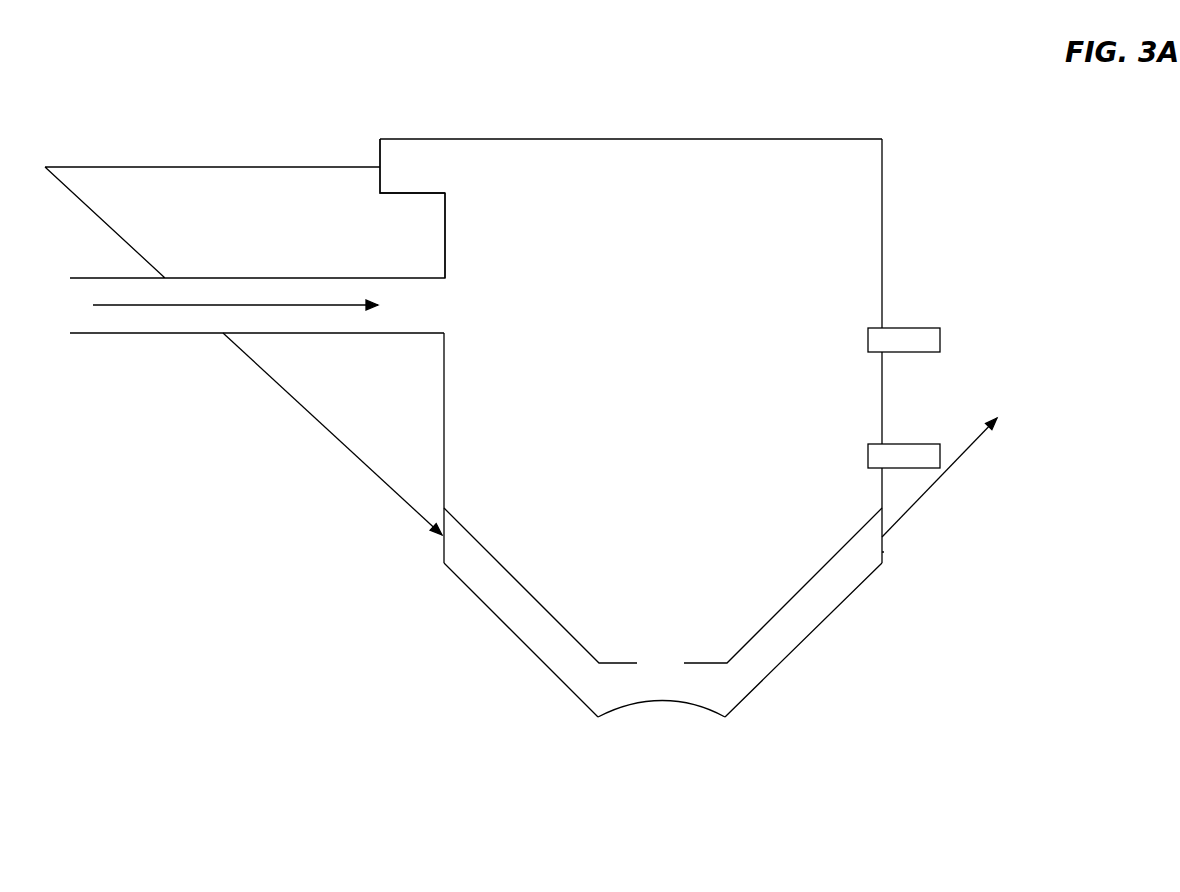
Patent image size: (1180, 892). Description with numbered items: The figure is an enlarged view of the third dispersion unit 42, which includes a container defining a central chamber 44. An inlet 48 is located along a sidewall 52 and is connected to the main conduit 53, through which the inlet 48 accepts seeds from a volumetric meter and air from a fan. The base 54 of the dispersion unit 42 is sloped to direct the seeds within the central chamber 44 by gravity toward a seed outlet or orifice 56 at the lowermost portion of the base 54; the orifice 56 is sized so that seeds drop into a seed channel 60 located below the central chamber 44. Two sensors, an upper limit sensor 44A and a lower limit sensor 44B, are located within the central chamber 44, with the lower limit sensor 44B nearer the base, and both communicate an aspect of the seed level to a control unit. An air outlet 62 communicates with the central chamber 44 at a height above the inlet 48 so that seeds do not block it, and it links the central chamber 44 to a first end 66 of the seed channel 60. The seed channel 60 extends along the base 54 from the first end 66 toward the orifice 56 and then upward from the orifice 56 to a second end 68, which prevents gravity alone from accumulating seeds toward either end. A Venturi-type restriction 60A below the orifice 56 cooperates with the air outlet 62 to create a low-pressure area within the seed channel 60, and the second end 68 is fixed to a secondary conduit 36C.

The third dispersion unit 42 is at (940, 143).
The central chamber 44 is at (675, 381).
The upper limit sensor 44A is at (898, 328).
The lower limit sensor 44B is at (895, 444).
The inlet 48 is at (457, 305).
The sidewall 52 is at (882, 238).
The main conduit 53 is at (152, 333).
The base 54 is at (490, 553).
The seed outlet or orifice 56 is at (662, 672).
The seed channel 60 is at (547, 665).
The Venturi-type restriction 60A is at (640, 703).
The air outlet 62 is at (458, 168).
The first end 66 is at (444, 545).
The second end 68 is at (882, 552).
The secondary conduit 36C is at (927, 495).